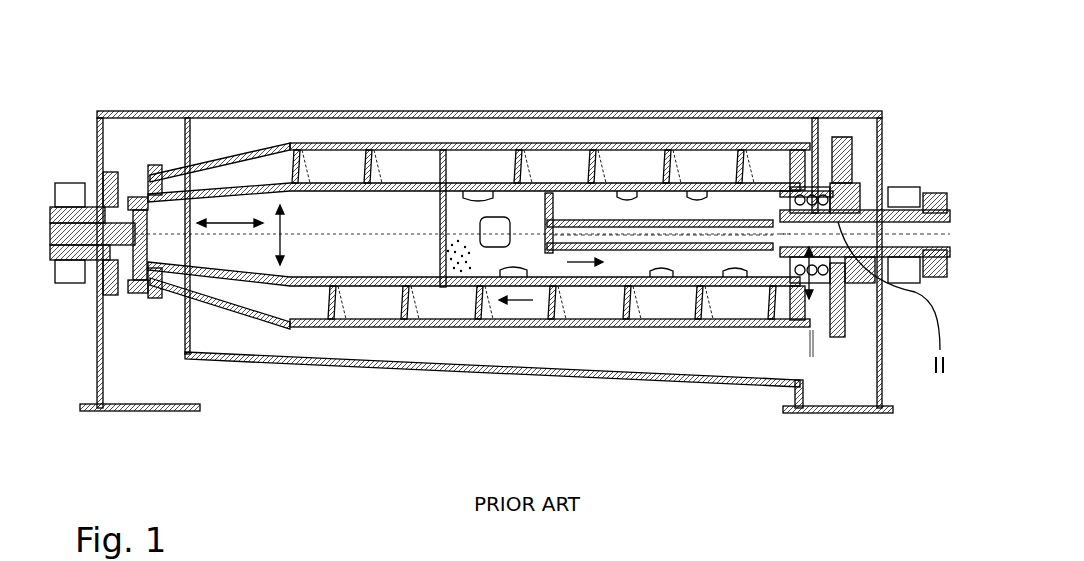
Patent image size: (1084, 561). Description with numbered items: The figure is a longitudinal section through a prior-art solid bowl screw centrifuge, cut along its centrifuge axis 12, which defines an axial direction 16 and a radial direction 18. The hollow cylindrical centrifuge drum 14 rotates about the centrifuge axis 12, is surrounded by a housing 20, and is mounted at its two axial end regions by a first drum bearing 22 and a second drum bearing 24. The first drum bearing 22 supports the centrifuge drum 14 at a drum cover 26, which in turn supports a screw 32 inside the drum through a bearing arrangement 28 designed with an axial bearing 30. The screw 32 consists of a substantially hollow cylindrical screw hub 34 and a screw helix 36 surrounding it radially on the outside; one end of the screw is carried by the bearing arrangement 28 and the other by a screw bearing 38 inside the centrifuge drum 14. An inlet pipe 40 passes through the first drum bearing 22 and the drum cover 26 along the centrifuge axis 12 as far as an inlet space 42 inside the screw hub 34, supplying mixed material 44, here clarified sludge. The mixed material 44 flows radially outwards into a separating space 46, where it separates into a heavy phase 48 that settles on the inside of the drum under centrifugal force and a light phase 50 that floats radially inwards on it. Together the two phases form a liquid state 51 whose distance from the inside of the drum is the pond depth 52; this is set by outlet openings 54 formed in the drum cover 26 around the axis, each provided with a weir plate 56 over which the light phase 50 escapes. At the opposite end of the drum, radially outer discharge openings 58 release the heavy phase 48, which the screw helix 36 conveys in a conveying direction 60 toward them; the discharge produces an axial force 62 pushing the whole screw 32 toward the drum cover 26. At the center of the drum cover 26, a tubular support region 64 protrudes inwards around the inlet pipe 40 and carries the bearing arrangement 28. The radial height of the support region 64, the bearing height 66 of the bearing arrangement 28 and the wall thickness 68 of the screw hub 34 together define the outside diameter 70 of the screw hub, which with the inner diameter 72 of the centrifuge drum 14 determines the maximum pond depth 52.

The centrifuge axis 12 is at (165, 232).
The centrifuge drum 14 is at (322, 142).
The axial direction 16 is at (240, 220).
The radial direction 18 is at (277, 227).
The housing 20 is at (352, 111).
The first drum bearing 22 is at (907, 205).
The second drum bearing 24 is at (75, 205).
The drum cover 26 is at (860, 212).
The bearing arrangement 28 is at (815, 179).
The axial bearing 30 is at (808, 183).
The screw 32 is at (410, 153).
The screw hub 34 is at (423, 185).
The screw helix 36 is at (445, 185).
The screw bearing 38 is at (117, 205).
The inlet pipe 40 is at (583, 228).
The inlet space 42 is at (526, 215).
The mixed material 44 is at (458, 248).
The separating space 46 is at (432, 298).
The heavy phase 48 is at (517, 322).
The light phase 50 is at (715, 304).
The liquid state 51 is at (775, 205).
The pond depth 52 is at (756, 195).
The outlet openings 54 is at (843, 288).
The weir plate 56 is at (865, 340).
The discharge openings 58 is at (140, 287).
The conveying direction 60 is at (533, 300).
The axial force 62 is at (582, 262).
The support region 64 is at (827, 262).
The bearing height 66 is at (775, 205).
The wall thickness 68 is at (800, 282).
The outside diameter 70 is at (317, 247).
The inner diameter 72 is at (348, 252).